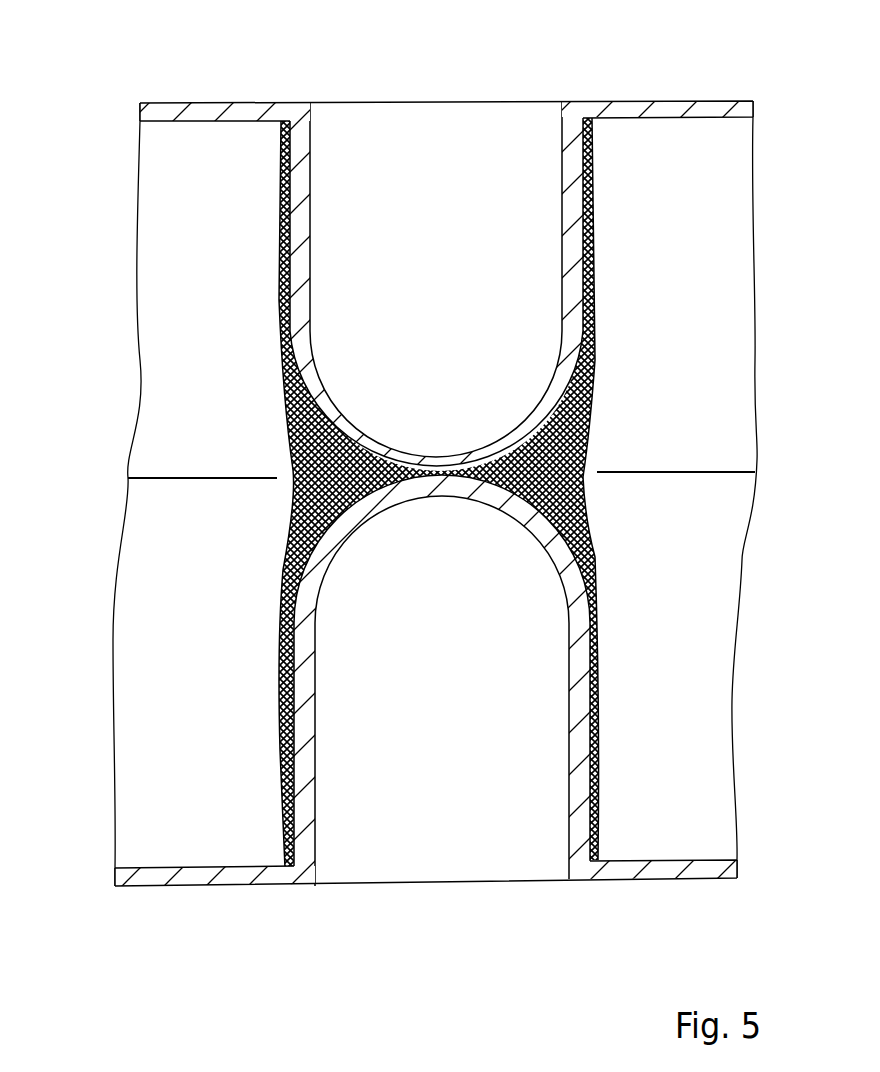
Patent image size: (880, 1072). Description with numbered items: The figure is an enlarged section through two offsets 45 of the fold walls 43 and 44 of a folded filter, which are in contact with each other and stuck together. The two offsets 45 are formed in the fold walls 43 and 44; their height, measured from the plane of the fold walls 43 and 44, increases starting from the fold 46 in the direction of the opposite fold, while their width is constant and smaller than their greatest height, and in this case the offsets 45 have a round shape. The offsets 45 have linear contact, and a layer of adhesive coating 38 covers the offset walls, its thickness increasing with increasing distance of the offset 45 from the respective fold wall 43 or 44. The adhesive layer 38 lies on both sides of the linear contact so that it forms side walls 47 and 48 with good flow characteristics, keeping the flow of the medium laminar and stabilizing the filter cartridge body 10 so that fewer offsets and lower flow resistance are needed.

The housing body 10 is at (698, 723).
The layer of adhesive coating 38 is at (596, 410).
The fold wall 43 is at (720, 106).
The fold wall 44 is at (683, 867).
The offset 45 is at (280, 376).
The fold 46 is at (720, 472).
The side wall 47 is at (590, 510).
The side wall 48 is at (290, 513).